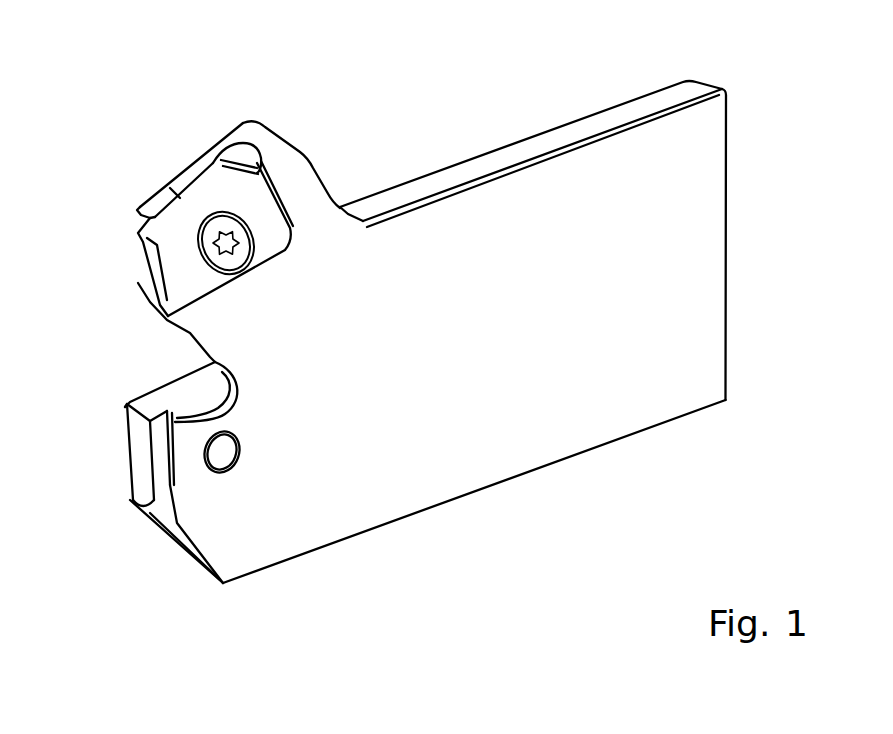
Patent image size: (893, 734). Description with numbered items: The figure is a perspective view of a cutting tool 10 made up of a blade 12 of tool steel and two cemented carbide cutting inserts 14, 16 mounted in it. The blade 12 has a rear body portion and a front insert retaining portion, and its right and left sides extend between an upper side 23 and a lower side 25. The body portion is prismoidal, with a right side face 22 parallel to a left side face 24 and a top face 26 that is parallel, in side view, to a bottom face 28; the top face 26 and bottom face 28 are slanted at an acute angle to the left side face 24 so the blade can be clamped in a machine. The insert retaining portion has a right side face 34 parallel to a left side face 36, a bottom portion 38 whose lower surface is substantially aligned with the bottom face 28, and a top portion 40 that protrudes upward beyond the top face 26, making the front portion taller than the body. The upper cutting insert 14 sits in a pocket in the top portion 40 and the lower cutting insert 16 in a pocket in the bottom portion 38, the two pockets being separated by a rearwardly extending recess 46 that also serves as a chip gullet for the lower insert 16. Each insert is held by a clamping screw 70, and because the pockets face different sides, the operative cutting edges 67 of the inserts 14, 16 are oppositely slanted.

The cutting tool 10 is at (522, 623).
The blade 12 is at (636, 165).
The cutting insert 14 is at (142, 268).
The cutting insert 16 is at (127, 458).
The right side face 22 is at (485, 233).
The upper side 23 is at (410, 120).
The left side face 24 is at (612, 412).
The lower side 25 is at (393, 594).
The top face 26 is at (570, 133).
The bottom face 28 is at (433, 503).
The right side face 34 is at (183, 527).
The left side face 36 is at (292, 517).
The bottom portion 38 is at (220, 592).
The top portion 40 is at (314, 160).
The recess 46 is at (168, 353).
The operative cutting edge 67 is at (137, 240).
The clamping screw 70 is at (223, 231).